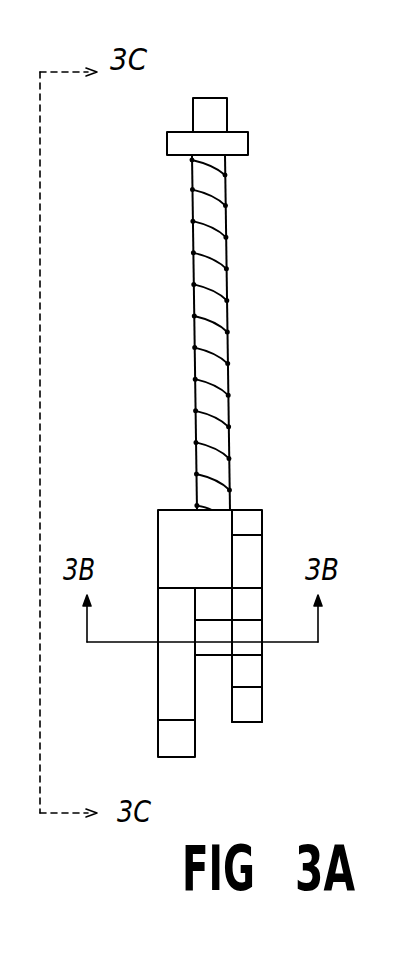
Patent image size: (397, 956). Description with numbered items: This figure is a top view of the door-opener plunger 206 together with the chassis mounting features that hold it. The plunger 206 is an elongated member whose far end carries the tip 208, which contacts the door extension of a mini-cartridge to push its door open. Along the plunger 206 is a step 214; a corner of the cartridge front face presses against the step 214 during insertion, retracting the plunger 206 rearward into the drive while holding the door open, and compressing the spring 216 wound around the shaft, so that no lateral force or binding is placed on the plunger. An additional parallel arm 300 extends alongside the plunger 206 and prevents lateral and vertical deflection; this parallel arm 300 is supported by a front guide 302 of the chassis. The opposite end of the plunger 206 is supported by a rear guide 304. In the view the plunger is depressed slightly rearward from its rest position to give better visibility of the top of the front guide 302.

The rear guide 304 is at (248, 143).
The spring 216 is at (228, 300).
The parallel arm 300 is at (262, 550).
The step 214 is at (175, 590).
The plunger 206 is at (158, 650).
The front guide 302 is at (263, 647).
The tip 208 is at (182, 757).